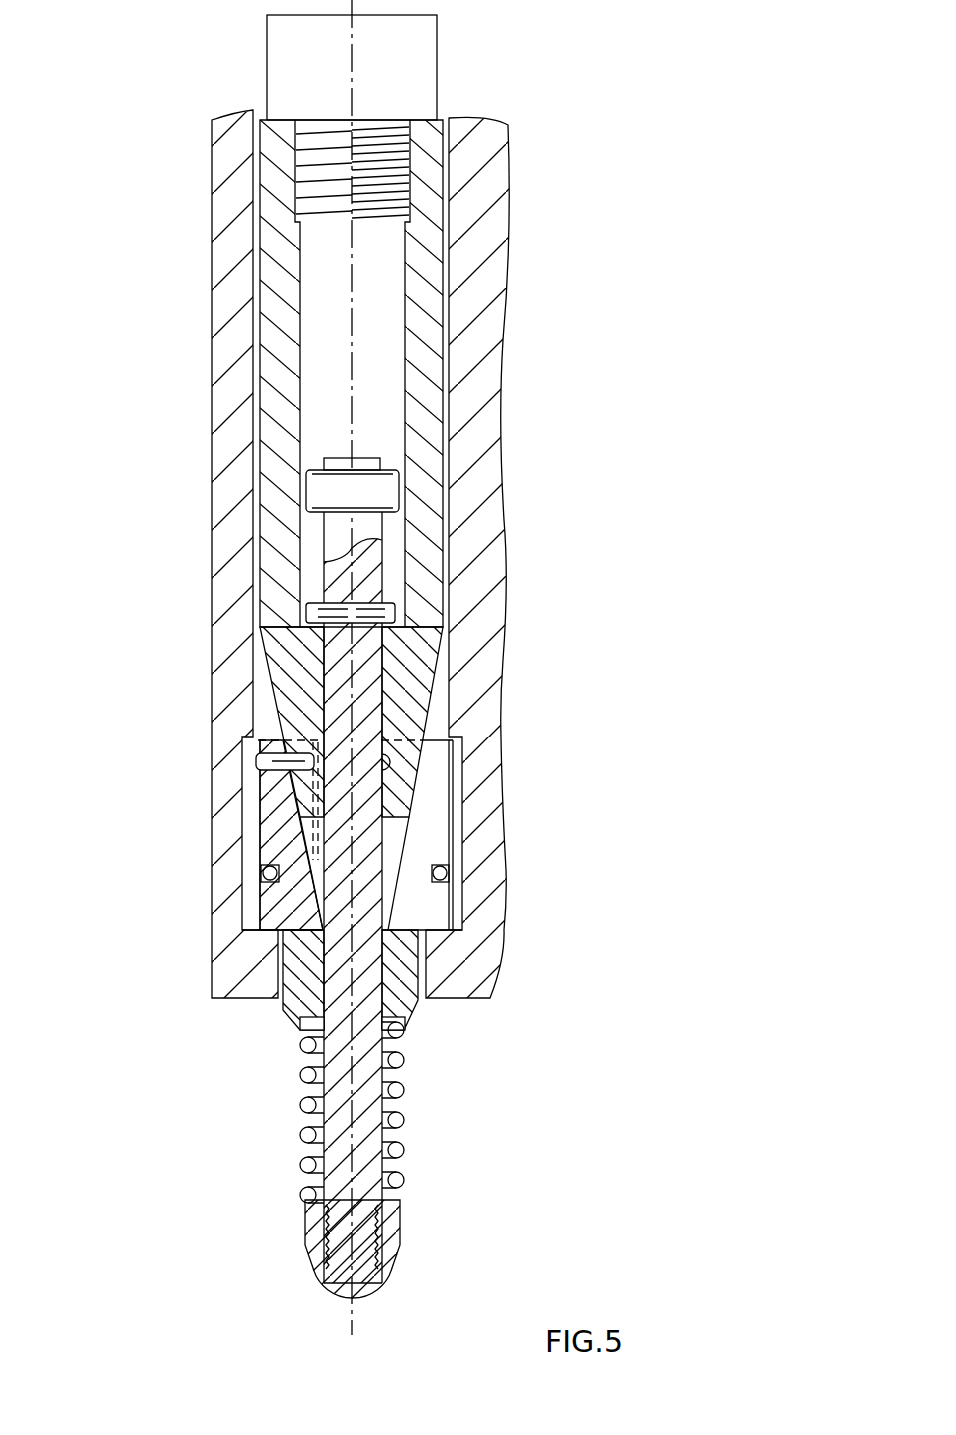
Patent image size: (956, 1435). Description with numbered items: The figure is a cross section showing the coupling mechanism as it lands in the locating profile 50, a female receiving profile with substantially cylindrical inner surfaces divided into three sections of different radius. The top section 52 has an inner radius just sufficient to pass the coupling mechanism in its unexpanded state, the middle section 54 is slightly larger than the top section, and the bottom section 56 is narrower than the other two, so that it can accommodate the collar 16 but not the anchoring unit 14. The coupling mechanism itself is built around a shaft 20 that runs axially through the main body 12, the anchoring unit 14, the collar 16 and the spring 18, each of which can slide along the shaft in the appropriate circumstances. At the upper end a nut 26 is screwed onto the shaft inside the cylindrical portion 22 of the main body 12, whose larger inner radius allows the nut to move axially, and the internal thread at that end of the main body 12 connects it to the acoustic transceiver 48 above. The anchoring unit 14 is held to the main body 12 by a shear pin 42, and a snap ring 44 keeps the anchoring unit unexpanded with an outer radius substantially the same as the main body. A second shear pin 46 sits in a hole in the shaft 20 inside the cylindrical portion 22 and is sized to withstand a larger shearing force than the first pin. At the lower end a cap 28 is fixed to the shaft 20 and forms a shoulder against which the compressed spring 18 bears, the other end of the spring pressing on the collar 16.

The main body 12 is at (262, 318).
The anchoring unit 14 is at (277, 823).
The collar 16 is at (405, 998).
The spring 18 is at (308, 1108).
The shaft 20 is at (368, 1130).
The cylindrical portion 22 is at (285, 676).
The nut 26 is at (318, 487).
The cap 28 is at (387, 1219).
The shear pin 42 is at (255, 762).
The snap ring 44 is at (263, 876).
The second shear pin 46 is at (306, 610).
The acoustic transceiver 48 is at (415, 74).
The locating profile 50 is at (552, 411).
The top section 52 is at (487, 585).
The middle section 54 is at (483, 828).
The bottom section 56 is at (482, 968).